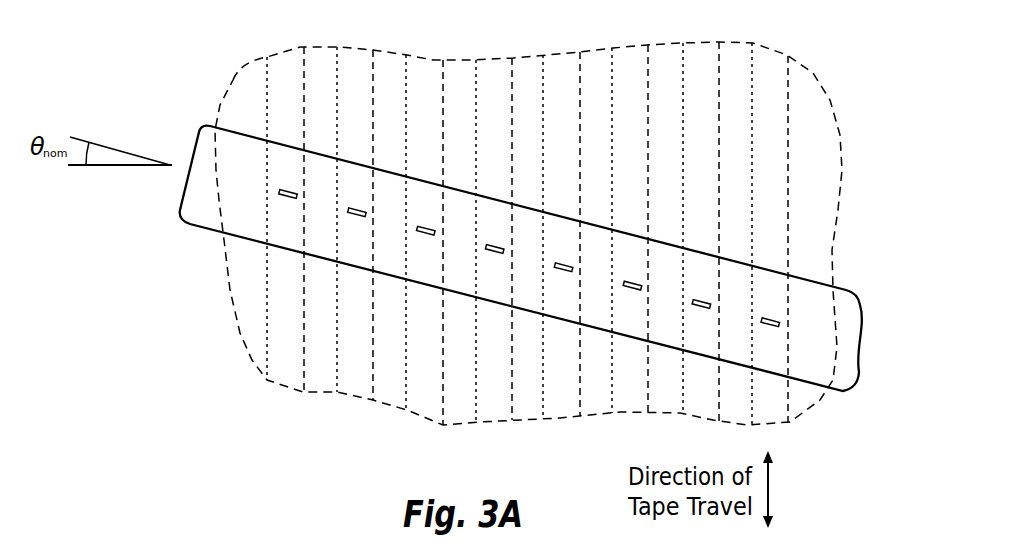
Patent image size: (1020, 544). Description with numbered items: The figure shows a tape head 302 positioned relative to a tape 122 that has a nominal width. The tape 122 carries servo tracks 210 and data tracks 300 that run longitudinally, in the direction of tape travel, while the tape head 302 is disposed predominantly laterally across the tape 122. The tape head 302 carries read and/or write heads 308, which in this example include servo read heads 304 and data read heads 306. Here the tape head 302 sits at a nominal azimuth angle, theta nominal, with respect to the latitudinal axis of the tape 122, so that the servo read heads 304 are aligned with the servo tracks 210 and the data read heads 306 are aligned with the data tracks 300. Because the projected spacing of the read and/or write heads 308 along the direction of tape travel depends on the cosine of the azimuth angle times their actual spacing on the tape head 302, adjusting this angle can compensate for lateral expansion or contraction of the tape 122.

The tape 122 is at (433, 60).
The servo tracks 210 is at (288, 368).
The data tracks 300 is at (356, 380).
The tape head 302 is at (202, 122).
The servo read heads 304 is at (291, 200).
The data read heads 306 is at (355, 217).
The read and/or write heads 308 is at (820, 332).